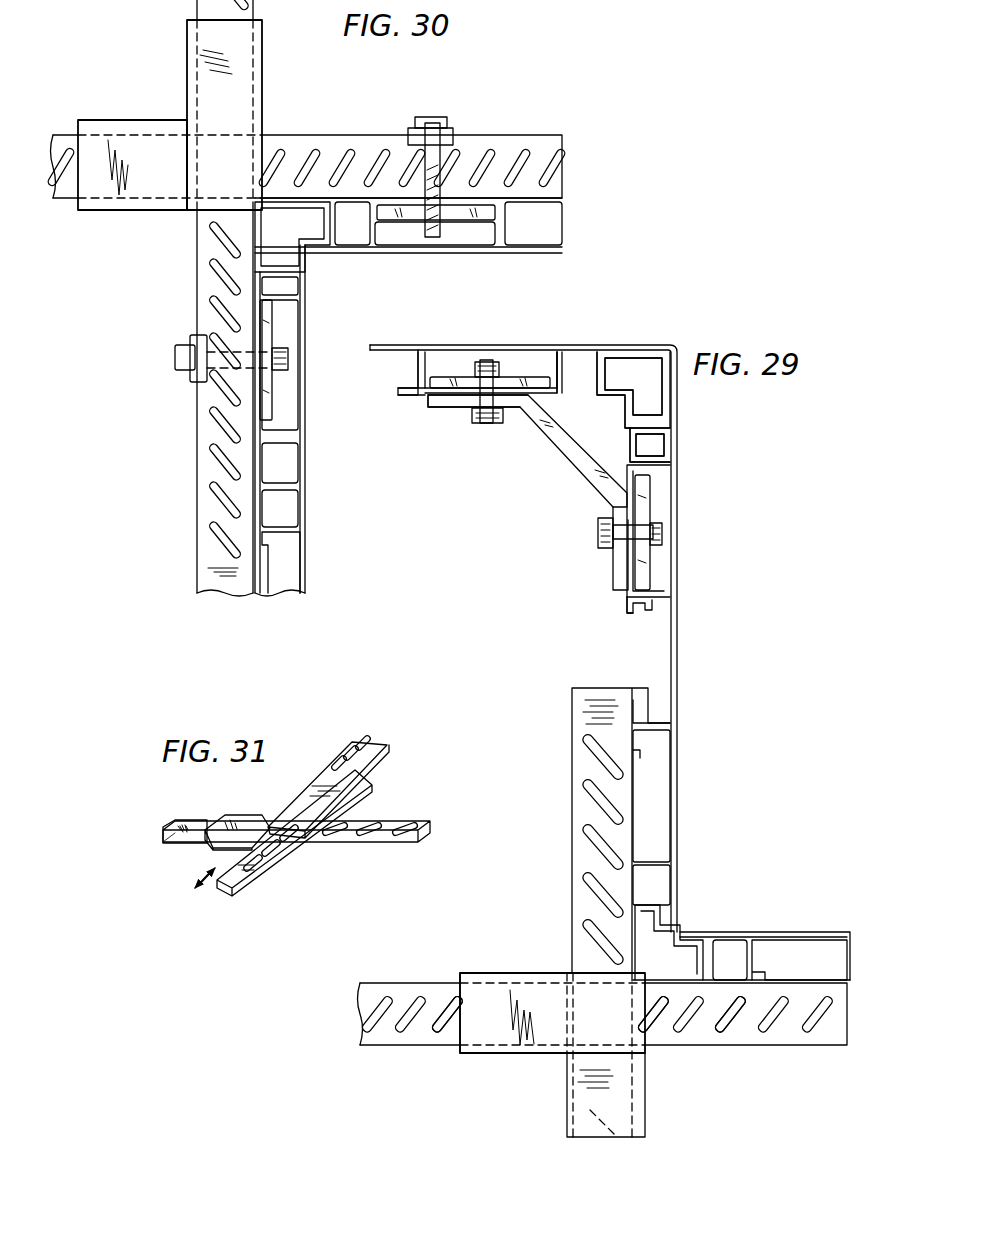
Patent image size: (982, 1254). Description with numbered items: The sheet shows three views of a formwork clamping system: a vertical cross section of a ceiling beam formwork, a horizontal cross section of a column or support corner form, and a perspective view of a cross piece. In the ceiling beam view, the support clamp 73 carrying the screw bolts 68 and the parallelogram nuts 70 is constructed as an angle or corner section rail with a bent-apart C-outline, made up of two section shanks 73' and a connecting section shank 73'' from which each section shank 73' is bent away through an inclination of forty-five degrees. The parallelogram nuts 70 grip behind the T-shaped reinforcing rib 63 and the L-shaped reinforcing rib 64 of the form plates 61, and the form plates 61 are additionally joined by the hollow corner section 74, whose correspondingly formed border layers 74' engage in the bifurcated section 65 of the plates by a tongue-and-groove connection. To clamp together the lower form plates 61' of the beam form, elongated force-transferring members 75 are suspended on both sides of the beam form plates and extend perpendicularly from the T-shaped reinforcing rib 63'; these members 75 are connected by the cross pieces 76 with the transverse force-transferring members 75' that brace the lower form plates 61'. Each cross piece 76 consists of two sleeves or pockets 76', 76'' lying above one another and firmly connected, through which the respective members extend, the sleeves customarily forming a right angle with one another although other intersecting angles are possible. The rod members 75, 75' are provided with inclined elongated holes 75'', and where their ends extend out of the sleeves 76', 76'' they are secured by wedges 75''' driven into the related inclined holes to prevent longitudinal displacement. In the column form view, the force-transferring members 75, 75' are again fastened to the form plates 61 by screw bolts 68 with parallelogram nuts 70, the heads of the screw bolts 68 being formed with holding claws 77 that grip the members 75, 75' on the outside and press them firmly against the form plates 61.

In FIG. 29, the form plate 61 is at (549, 625).
In FIG. 29, the lower form plate 61' is at (765, 938).
In FIG. 29, the T-shaped reinforcing rib 63 is at (518, 498).
In FIG. 29, the T-shaped reinforcing rib 63' is at (651, 796).
In FIG. 29, the L-shaped reinforcing rib 64 is at (561, 372).
In FIG. 29, the bifurcated section 65 is at (645, 428).
In FIG. 30, the screw bolt 68 is at (448, 132).
In FIG. 29, the screw bolt 68 is at (490, 423).
In FIG. 30, the parallelogram nut 70 is at (470, 222).
In FIG. 29, the parallelogram nut 70 is at (455, 388).
In FIG. 29, the support clamp 73 is at (527, 451).
In FIG. 29, the section shank 73' is at (455, 412).
In FIG. 29, the connecting section shank 73'' is at (586, 530).
In FIG. 29, the hollow corner section 74 is at (655, 390).
In FIG. 29, the border layer 74' is at (633, 386).
In FIG. 30, the elongated force-transferring member 75 is at (201, 298).
In FIG. 29, the elongated force-transferring member 75 is at (602, 912).
In FIG. 31, the elongated force-transferring member 75 is at (294, 833).
In FIG. 30, the transverse force-transferring member 75' is at (306, 152).
In FIG. 29, the transverse force-transferring member 75' is at (603, 1029).
In FIG. 31, the transverse force-transferring member 75' is at (296, 849).
In FIG. 29, the inclined elongated hole 75'' is at (727, 1033).
In FIG. 29, the wedge 75''' is at (551, 1007).
In FIG. 30, the cross piece 76 is at (170, 115).
In FIG. 29, the cross piece 76 is at (552, 1002).
In FIG. 31, the cross piece 76 is at (216, 818).
In FIG. 29, the sleeve 76' is at (505, 1002).
In FIG. 29, the sleeve 76'' is at (582, 1055).
In FIG. 31, the sleeve 76'' is at (323, 786).
In FIG. 30, the holding claw 77 is at (192, 345).